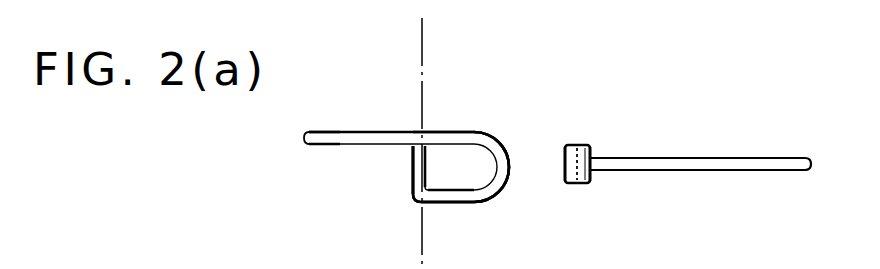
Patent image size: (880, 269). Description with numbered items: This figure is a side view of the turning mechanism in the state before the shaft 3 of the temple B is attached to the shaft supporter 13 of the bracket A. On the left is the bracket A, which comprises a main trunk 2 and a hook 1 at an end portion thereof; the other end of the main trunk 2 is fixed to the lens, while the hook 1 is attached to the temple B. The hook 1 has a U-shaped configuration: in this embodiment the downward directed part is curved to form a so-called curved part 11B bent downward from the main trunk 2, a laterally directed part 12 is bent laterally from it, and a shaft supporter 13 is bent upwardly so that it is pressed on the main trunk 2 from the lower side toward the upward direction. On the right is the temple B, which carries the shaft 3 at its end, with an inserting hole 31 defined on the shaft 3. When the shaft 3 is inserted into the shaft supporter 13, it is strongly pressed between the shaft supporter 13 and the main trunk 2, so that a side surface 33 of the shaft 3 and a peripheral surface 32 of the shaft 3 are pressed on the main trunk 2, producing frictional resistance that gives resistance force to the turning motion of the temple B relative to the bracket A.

The bracket A is at (348, 132).
The hook 1 is at (440, 132).
The main trunk 2 is at (323, 147).
The shaft supporter 13 is at (413, 172).
The laterally directed part 12 is at (450, 206).
The curved part 11B is at (503, 196).
The shaft 3 is at (565, 157).
The inserting hole 31 is at (580, 142).
The peripheral surface 32 is at (592, 152).
The side surface 33 is at (573, 186).
The temple B is at (715, 158).